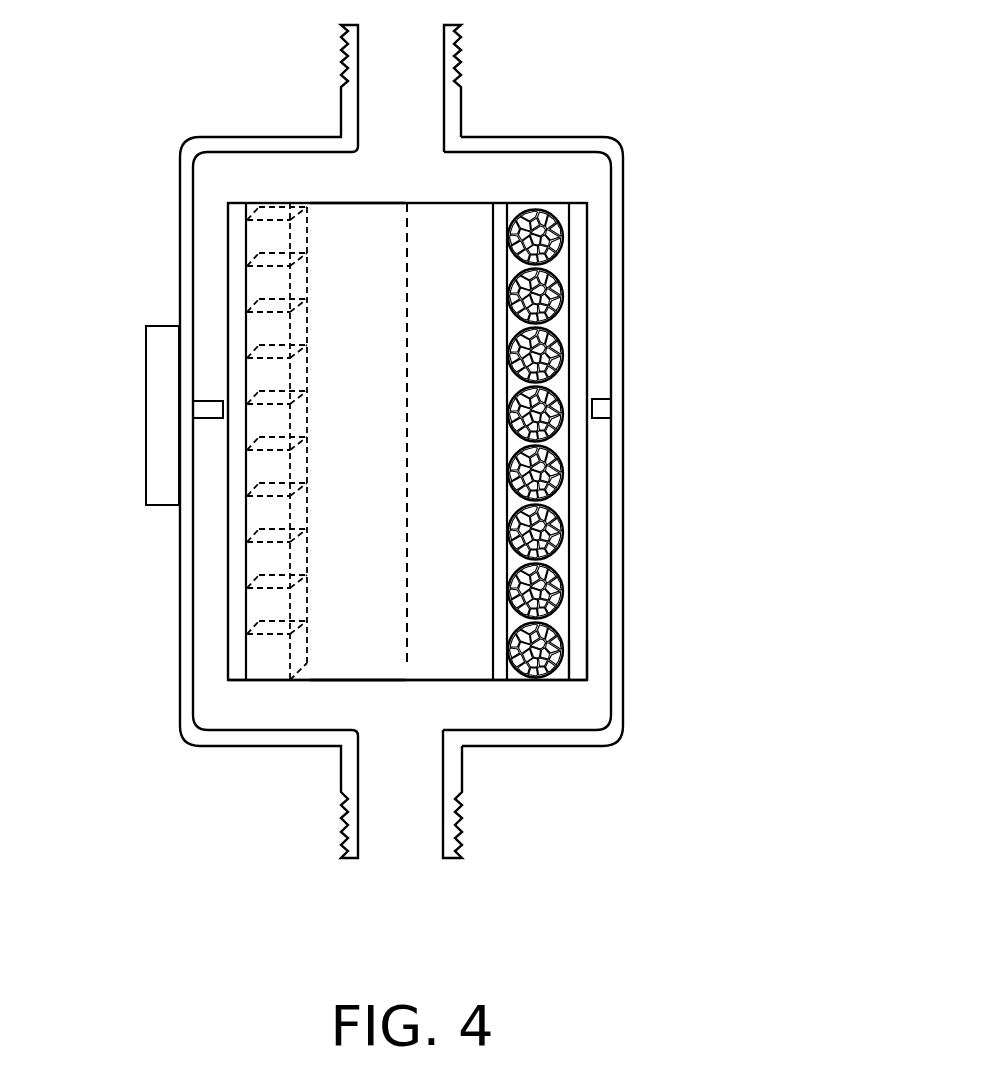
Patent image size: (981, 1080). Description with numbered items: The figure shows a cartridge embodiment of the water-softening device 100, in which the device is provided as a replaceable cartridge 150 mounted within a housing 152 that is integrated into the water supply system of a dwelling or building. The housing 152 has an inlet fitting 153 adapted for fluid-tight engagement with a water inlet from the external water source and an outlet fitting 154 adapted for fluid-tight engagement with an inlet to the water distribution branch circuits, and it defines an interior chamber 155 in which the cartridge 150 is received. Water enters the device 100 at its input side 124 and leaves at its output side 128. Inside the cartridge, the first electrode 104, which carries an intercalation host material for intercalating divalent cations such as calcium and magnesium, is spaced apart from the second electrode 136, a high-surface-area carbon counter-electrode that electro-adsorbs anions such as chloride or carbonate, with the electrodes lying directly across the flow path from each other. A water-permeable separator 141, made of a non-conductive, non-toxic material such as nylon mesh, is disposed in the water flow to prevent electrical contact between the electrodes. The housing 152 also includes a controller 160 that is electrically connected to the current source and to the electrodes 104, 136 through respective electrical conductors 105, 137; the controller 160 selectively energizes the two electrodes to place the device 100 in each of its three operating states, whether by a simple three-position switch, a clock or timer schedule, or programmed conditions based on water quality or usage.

The device 100 is at (477, 200).
The electrode 104 is at (238, 200).
The electrical conductor 105 is at (207, 412).
The input side 124 is at (340, 200).
The output side 128 is at (362, 686).
The second electrode 136 is at (577, 682).
The electrical conductor 137 is at (602, 412).
The water-permeable separator 141 is at (407, 666).
The cartridge 150 is at (590, 282).
The housing 152 is at (617, 138).
The inlet fitting 153 is at (459, 57).
The outlet fitting 154 is at (455, 773).
The interior chamber 155 is at (600, 712).
The controller 160 is at (155, 326).